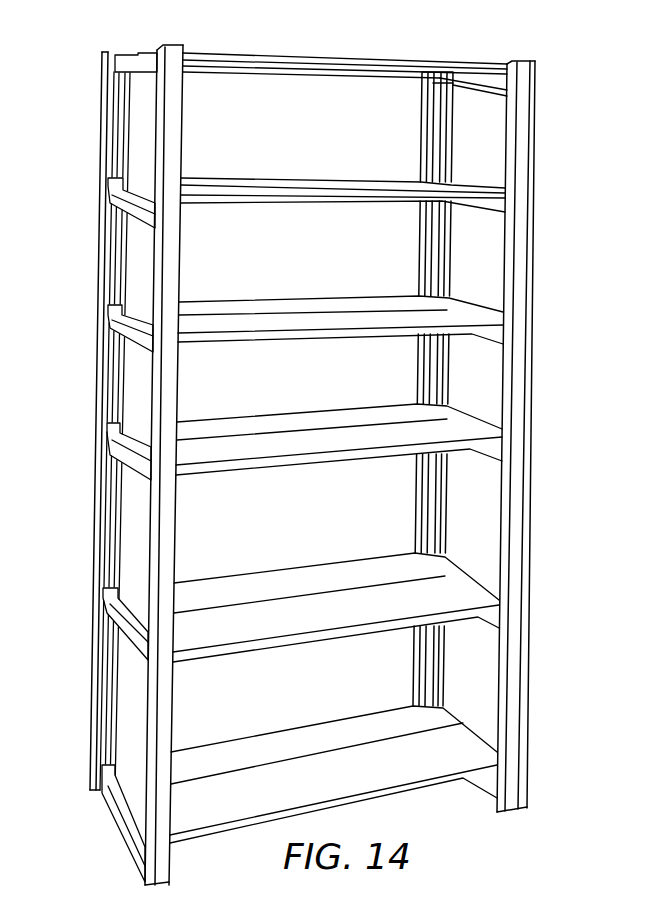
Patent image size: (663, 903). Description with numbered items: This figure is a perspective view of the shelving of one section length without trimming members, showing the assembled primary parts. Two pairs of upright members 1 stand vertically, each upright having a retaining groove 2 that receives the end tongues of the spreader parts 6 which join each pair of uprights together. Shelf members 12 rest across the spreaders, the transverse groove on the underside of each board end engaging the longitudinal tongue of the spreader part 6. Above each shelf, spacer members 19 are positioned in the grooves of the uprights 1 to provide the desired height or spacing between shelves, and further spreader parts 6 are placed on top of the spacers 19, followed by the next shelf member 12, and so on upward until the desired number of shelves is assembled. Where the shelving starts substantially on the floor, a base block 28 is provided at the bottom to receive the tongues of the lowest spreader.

The upright member 1 is at (158, 390).
The retaining groove 2 is at (288, 474).
The spreader part 6 is at (125, 455).
The shelf member or board 12 is at (260, 622).
The spacer 19 is at (112, 545).
The base block 28 is at (127, 828).